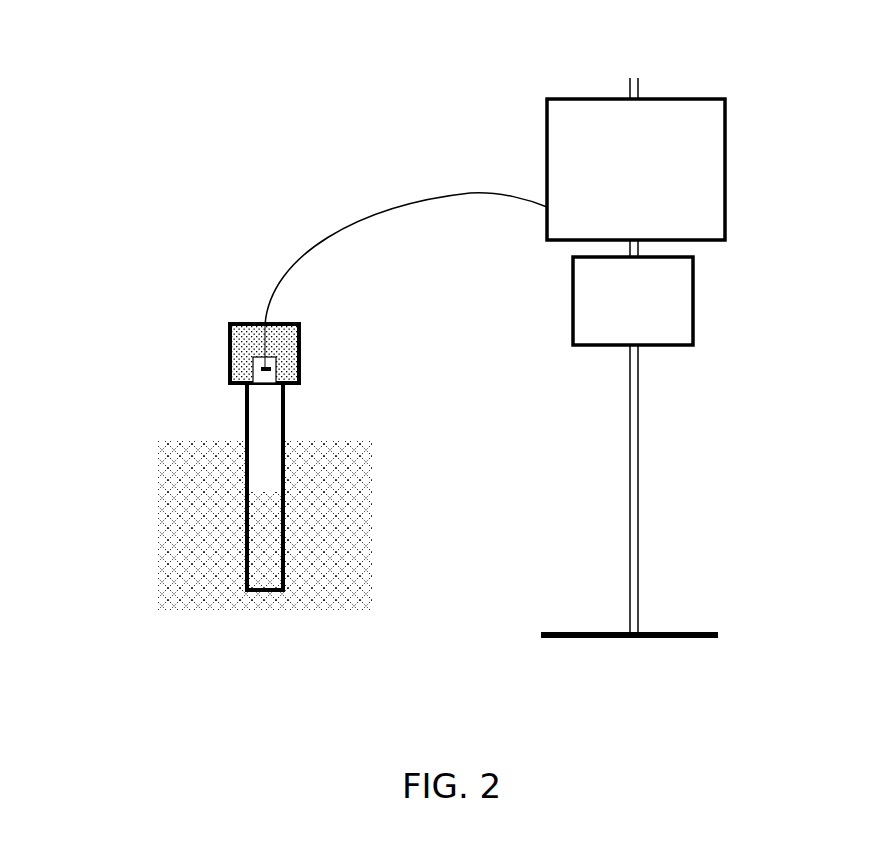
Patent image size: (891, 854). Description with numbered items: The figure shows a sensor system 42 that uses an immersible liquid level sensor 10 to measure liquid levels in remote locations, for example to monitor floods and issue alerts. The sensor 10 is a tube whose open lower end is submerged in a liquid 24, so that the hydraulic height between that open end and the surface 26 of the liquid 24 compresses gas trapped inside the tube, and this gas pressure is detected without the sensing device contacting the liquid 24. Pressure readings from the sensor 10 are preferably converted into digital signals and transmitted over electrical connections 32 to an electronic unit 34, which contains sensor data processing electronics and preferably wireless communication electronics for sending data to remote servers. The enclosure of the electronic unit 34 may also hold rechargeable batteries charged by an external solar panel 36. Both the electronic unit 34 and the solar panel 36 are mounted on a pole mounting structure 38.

The sensor system 42 is at (155, 102).
The immersible liquid level sensor 10 is at (233, 320).
The liquid 24 is at (212, 552).
The surface of the liquid 26 is at (173, 438).
The electrical connections 32 is at (408, 193).
The electronic unit 34 is at (725, 158).
The solar panel 36 is at (693, 310).
The pole mounting structure 38 is at (643, 483).